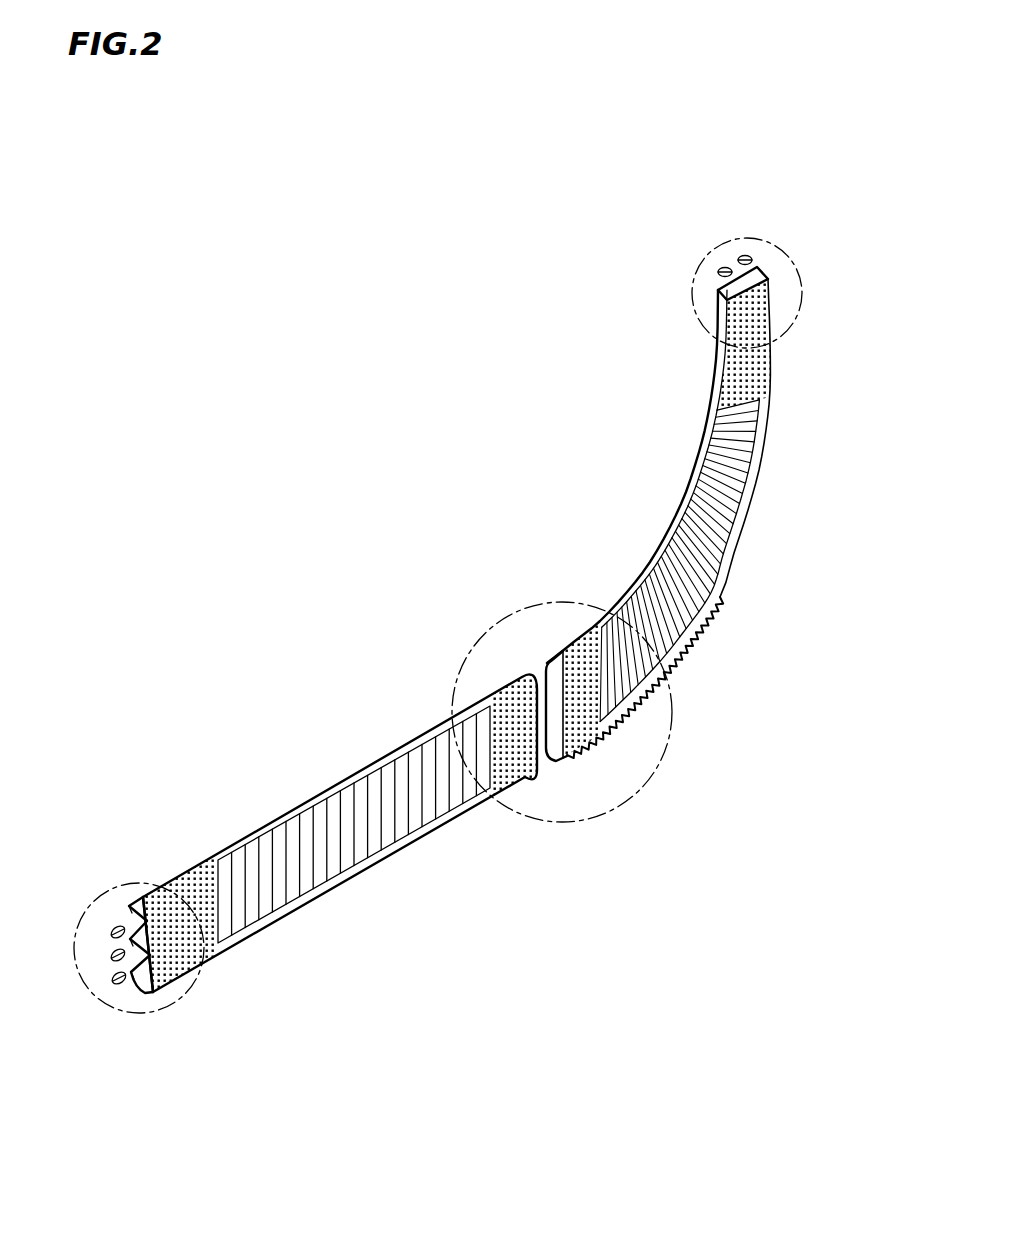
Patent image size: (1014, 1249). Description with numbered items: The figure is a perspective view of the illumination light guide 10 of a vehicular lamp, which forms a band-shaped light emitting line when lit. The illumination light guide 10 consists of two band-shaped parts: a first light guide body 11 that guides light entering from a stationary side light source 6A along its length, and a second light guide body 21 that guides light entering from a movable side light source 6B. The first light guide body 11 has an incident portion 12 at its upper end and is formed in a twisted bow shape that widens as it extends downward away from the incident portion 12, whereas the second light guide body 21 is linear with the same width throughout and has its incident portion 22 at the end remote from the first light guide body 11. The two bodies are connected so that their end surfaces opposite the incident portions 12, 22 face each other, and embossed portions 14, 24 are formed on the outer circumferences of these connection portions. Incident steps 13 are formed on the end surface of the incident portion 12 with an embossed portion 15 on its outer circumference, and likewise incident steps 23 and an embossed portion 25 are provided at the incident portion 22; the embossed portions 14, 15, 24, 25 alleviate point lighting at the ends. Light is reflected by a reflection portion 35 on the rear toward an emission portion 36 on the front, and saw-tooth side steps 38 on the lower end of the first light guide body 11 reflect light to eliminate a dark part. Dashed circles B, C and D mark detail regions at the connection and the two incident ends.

The illumination light guide 10 is at (478, 413).
The first light guide body 11 is at (567, 480).
The incident portion 12 is at (720, 297).
The incident steps 13 is at (768, 276).
The embossed portion 14 is at (577, 633).
The embossed portion 15 is at (765, 327).
The second light guide body 21 is at (240, 738).
The incident portion 22 is at (177, 892).
The incident steps 23 is at (130, 897).
The embossed portion 24 is at (507, 683).
The embossed portion 25 is at (203, 863).
The reflection portion 35 is at (747, 512).
The emission portion 36 is at (745, 467).
The side steps 38 is at (698, 643).
The stationary side light source 6A is at (750, 250).
The movable side light source 6B is at (115, 990).
The detail region B is at (503, 620).
The detail region C is at (715, 243).
The detail region D is at (92, 902).